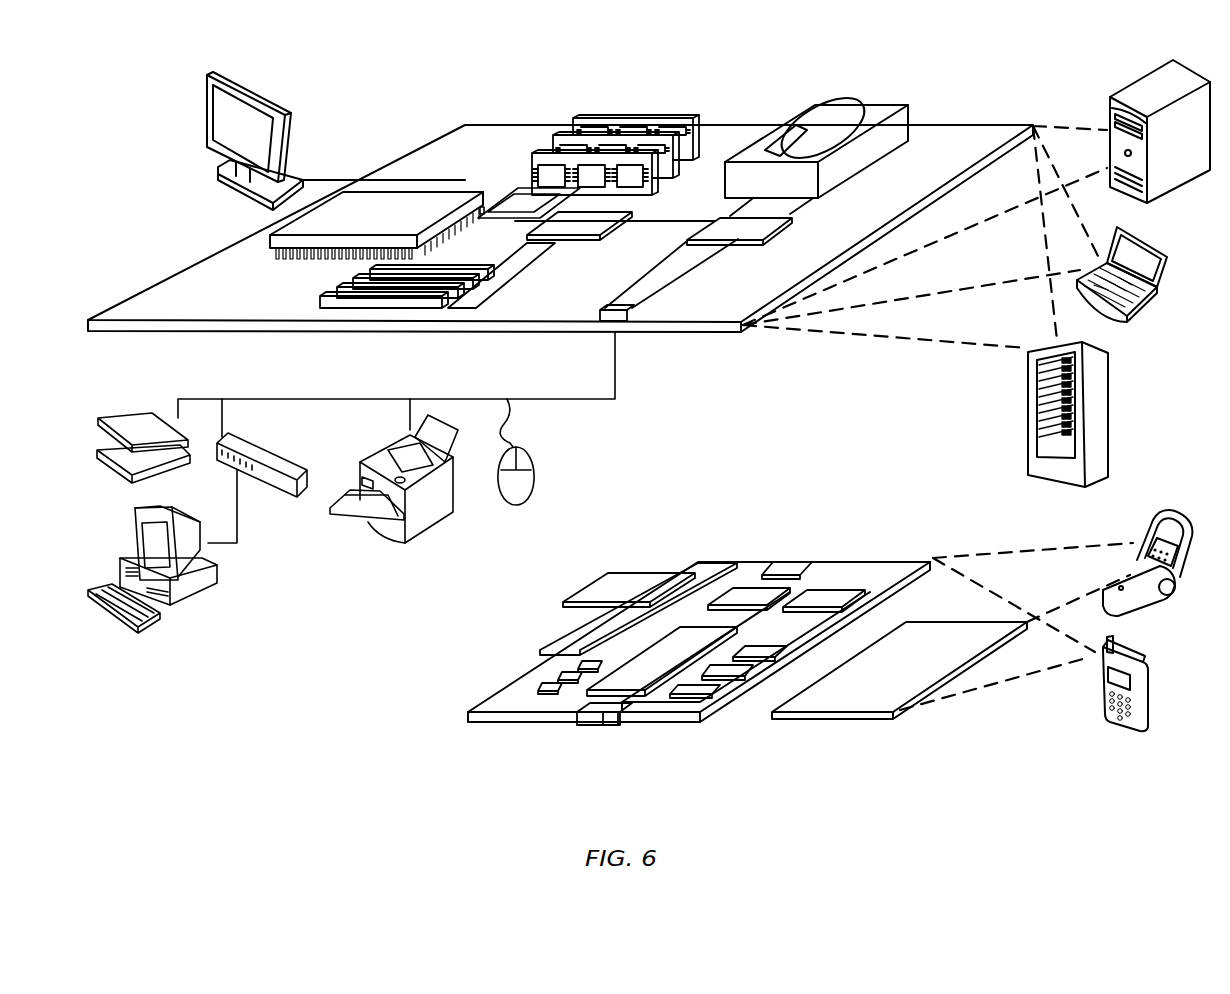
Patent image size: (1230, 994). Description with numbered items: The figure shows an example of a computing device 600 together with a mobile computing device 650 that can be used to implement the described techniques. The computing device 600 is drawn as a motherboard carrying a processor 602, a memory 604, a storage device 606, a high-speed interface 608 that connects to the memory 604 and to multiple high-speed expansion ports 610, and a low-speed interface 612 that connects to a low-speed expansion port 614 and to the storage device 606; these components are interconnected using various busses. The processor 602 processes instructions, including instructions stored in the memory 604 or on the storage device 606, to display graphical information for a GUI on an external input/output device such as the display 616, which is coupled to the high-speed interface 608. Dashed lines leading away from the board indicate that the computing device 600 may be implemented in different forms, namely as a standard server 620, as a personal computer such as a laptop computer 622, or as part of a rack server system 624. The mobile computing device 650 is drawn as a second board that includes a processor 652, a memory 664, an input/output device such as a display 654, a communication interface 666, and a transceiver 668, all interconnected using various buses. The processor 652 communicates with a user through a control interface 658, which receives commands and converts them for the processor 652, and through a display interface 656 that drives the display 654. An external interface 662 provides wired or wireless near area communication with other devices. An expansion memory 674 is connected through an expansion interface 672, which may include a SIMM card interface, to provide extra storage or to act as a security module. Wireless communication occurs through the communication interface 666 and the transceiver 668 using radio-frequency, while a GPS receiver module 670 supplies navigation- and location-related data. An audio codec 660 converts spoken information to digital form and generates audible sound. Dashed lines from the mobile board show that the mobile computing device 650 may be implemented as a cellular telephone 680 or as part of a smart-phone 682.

The computing device 600 is at (397, 101).
The processor 602 is at (270, 238).
The memory 604 is at (575, 119).
The storage device 606 is at (809, 108).
The high-speed interface 608 is at (520, 187).
The high-speed expansion ports 610 is at (342, 291).
The low-speed interface 612 is at (724, 222).
The low-speed expansion port 614 is at (620, 323).
The display 616 is at (210, 74).
The standard server 620 is at (1110, 112).
The laptop computer 622 is at (1170, 252).
The rack server system 624 is at (1028, 435).
The mobile computing device 650 is at (449, 719).
The processor 652 is at (634, 684).
The display 654 is at (862, 700).
The display interface 656 is at (700, 692).
The control interface 658 is at (735, 674).
The audio codec 660 is at (758, 652).
The external interface 662 is at (604, 707).
The memory 664 is at (560, 677).
The communication interface 666 is at (752, 598).
The transceiver 668 is at (822, 597).
The GPS receiver module 670 is at (800, 562).
The expansion interface 672 is at (683, 572).
The expansion memory 674 is at (608, 573).
The cellular telephone 680 is at (1151, 518).
The smart-phone 682 is at (1103, 684).